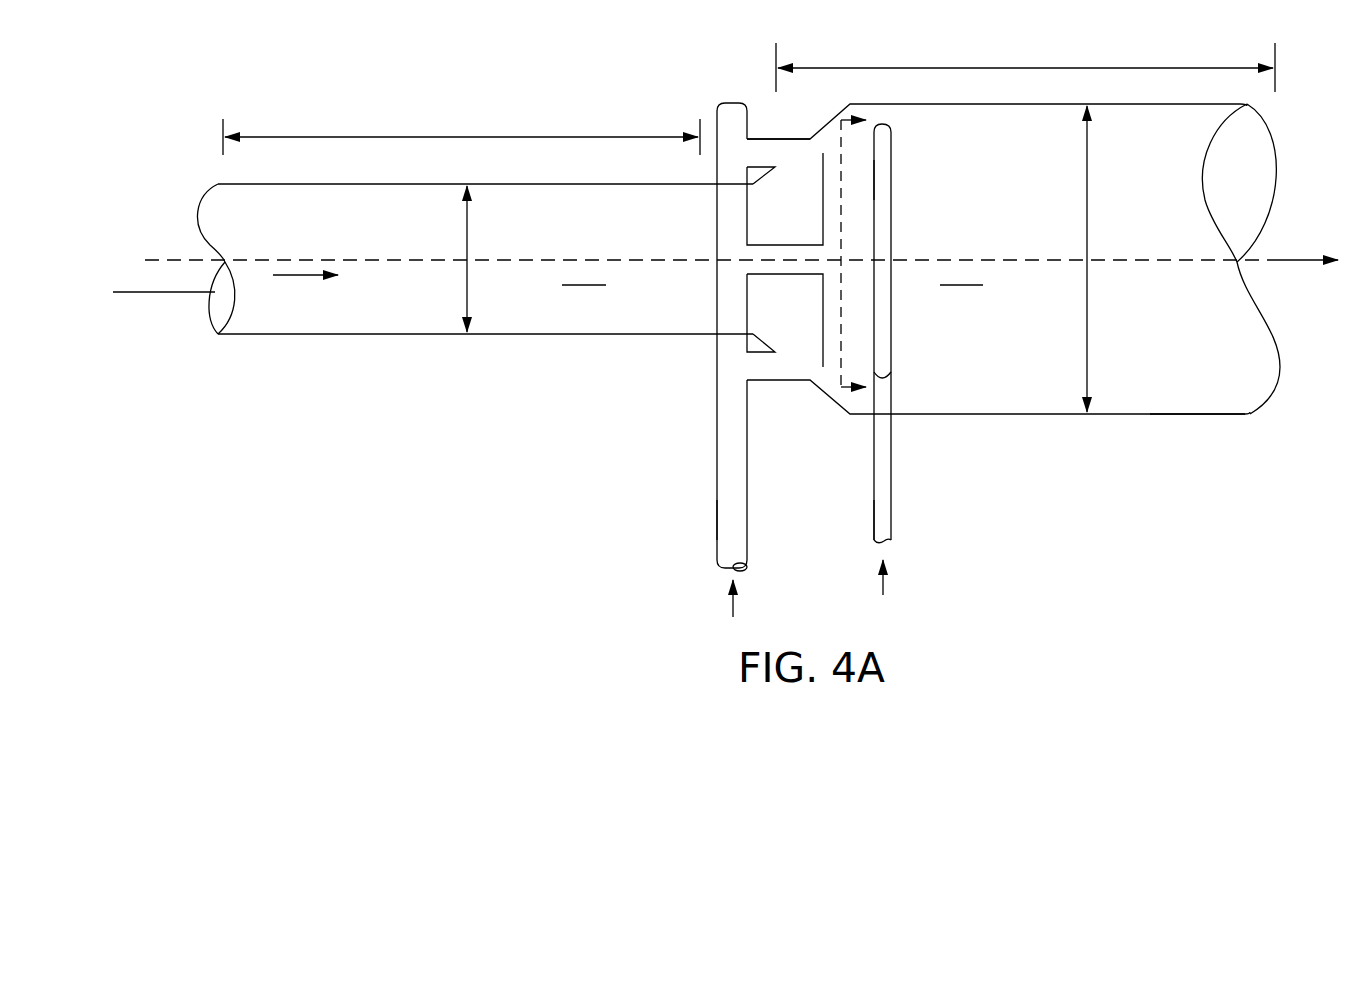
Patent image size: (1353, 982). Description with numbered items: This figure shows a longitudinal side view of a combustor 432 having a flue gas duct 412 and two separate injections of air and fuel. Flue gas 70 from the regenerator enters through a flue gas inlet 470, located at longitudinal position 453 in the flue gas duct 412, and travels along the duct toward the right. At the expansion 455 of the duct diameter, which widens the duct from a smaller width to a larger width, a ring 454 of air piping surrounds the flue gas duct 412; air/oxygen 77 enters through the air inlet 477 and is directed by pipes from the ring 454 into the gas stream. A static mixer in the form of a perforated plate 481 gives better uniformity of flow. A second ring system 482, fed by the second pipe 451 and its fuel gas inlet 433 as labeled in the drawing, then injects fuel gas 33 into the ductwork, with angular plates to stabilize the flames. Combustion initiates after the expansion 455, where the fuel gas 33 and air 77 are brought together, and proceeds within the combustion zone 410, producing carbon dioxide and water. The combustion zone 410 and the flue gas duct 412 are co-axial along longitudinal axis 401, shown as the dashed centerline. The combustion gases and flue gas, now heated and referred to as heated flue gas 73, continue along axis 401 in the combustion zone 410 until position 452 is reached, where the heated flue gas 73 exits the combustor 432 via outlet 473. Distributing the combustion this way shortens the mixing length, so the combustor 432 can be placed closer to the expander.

The longitudinal axis 401 is at (133, 292).
The flue gas inlet 470 is at (228, 335).
The flue gas duct 412 is at (485, 217).
The flue gas 70 is at (309, 275).
The longitudinal position 453 is at (296, 305).
The expansion of the duct diameter 455 is at (776, 107).
The ring of air piping 454 is at (752, 501).
The air inlet 477 is at (742, 545).
The air/oxygen 77 is at (733, 603).
The perforated plate 481 is at (822, 218).
The second ring system 482 is at (886, 181).
The combustion zone 410 is at (1013, 224).
The second side tube 451 is at (904, 492).
The second side tube lumen 433 is at (886, 527).
The fuel gas 33 is at (883, 583).
The position 452 is at (1178, 256).
The heated flue gas 73 is at (1298, 258).
The outlet 473 is at (1190, 414).
The combustor 432 is at (1114, 508).